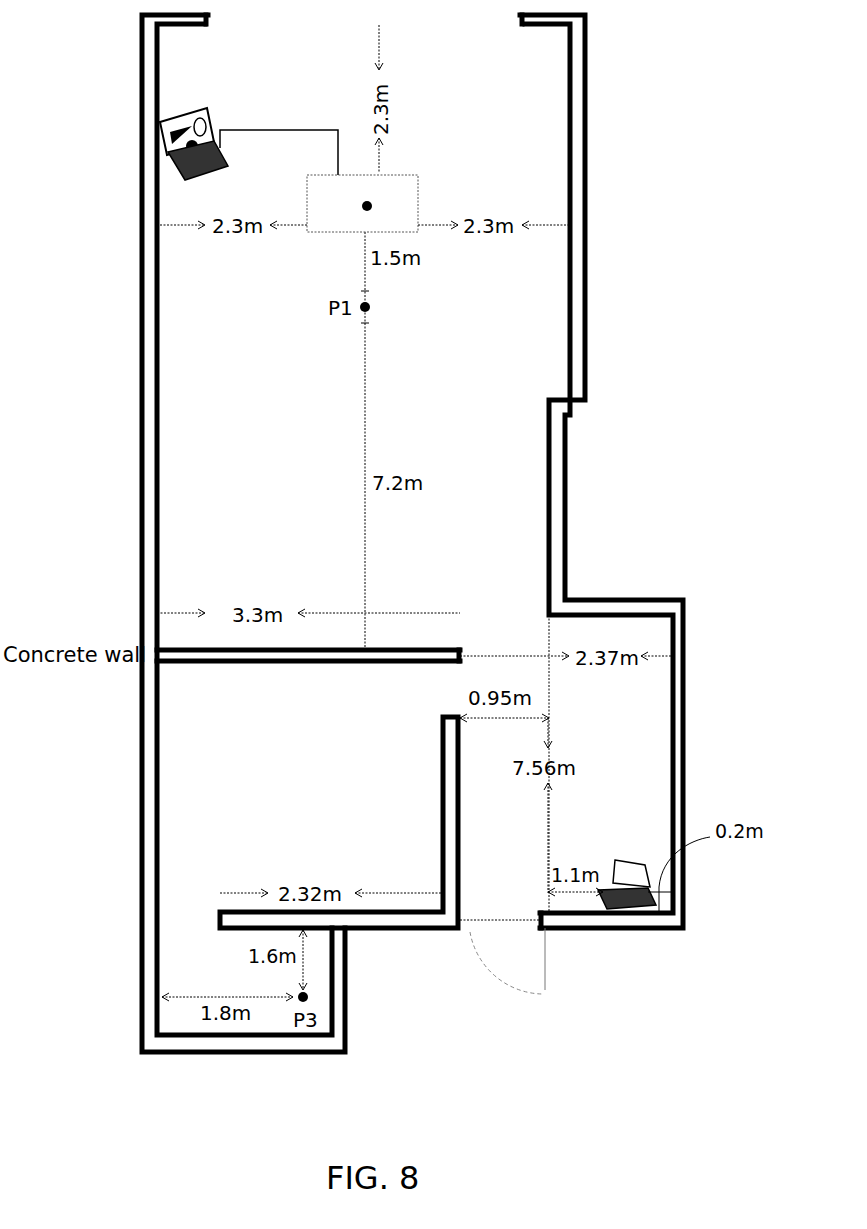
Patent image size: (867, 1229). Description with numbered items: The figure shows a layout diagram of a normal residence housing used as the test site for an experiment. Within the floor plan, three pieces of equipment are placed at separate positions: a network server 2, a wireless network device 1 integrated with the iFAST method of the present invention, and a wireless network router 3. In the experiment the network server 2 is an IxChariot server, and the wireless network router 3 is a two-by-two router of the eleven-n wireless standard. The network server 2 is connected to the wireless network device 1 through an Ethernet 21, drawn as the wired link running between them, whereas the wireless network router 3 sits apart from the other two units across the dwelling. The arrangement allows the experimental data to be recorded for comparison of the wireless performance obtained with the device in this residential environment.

The wireless network device 1 is at (398, 178).
The network server 2 is at (162, 125).
The Ethernet 21 is at (276, 130).
The wireless network router 3 is at (651, 910).